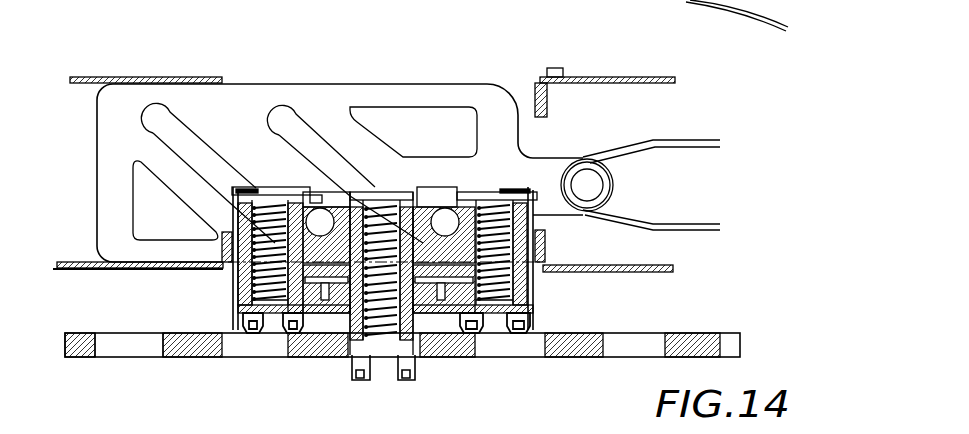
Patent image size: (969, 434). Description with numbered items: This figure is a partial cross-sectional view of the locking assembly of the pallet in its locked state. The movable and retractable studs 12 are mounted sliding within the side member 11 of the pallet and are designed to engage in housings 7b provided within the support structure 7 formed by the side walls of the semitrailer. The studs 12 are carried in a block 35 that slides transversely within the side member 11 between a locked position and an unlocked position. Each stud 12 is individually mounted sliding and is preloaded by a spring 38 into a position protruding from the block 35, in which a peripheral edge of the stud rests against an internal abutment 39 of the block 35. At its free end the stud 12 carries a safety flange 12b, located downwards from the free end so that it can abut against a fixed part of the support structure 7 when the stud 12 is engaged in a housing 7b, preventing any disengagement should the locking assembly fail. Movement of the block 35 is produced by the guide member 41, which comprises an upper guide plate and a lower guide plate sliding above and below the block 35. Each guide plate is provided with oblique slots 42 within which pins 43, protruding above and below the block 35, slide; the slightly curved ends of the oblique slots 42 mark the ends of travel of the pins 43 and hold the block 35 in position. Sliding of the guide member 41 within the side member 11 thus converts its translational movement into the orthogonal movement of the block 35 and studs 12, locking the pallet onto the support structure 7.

The support structure 7 is at (622, 364).
The housings 7b is at (122, 343).
The side member 11 is at (84, 70).
The studs 12 is at (650, 0).
The safety flange 12b is at (417, 367).
The block 35 is at (748, 0).
The spring 38 is at (403, 226).
The internal abutment 39 is at (678, 141).
The guide member 41 is at (112, 142).
The oblique slots 42 is at (278, 106).
The pins 43 is at (320, 208).